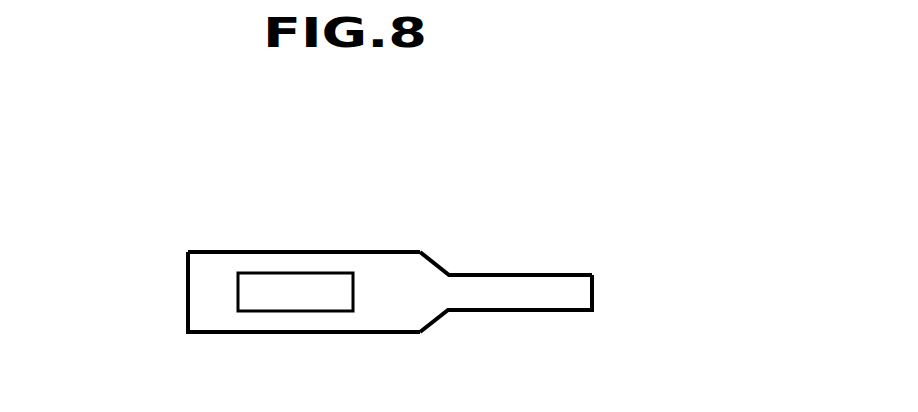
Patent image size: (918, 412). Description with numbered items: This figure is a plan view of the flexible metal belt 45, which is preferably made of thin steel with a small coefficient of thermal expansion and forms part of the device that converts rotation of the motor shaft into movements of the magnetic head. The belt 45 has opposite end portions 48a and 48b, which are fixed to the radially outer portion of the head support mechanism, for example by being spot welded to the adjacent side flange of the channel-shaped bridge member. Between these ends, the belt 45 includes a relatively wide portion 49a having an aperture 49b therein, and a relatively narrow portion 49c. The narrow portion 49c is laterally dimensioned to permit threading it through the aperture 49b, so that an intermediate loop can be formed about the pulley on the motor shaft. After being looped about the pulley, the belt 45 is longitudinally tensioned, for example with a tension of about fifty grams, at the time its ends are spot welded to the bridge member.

The flexible metal belt 45 is at (218, 226).
The end portion of the metal belt 48a is at (197, 292).
The end portion of the metal belt 48b is at (592, 292).
The relatively wide portion 49a is at (318, 251).
The aperture 49b is at (343, 277).
The relatively narrow portion 49c is at (531, 274).